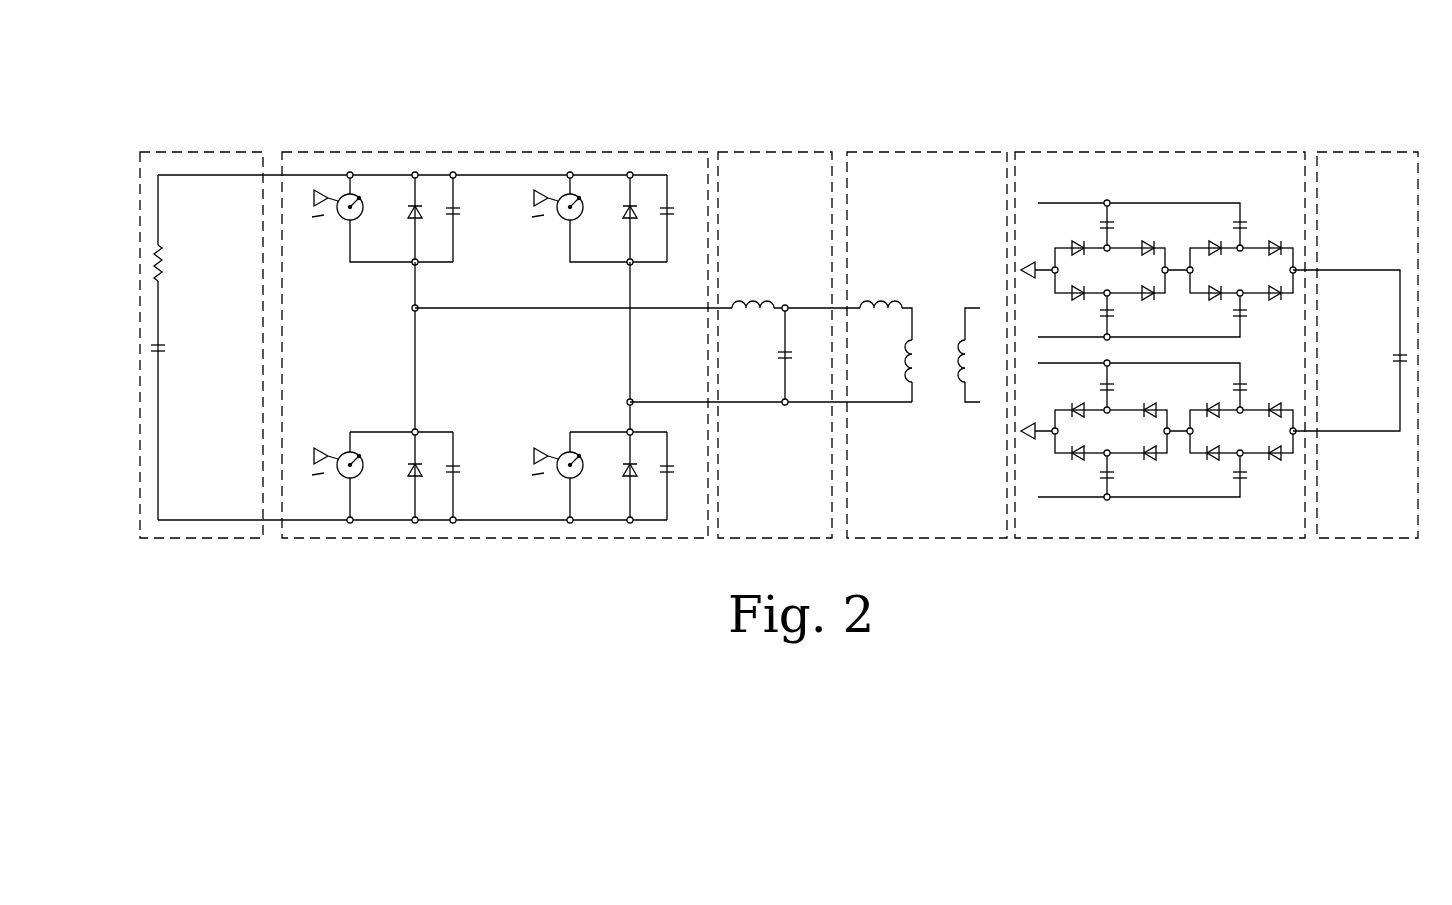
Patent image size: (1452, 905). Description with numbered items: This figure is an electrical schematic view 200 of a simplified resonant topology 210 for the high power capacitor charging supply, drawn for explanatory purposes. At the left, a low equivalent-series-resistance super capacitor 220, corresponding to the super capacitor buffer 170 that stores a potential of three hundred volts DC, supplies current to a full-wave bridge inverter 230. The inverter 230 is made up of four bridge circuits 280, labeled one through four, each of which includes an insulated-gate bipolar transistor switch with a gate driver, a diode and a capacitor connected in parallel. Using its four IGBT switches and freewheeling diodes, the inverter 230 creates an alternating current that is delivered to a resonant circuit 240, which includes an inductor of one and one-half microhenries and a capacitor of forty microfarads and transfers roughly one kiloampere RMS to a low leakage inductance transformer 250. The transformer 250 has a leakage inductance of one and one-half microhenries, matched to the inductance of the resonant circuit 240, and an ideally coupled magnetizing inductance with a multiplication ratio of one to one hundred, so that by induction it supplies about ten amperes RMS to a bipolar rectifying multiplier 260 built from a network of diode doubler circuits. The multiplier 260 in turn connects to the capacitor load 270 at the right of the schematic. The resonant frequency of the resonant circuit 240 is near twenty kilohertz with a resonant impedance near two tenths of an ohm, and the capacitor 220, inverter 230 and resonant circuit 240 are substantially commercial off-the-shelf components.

The schematic view 200 is at (233, 91).
The simplified resonant topology 210 is at (116, 143).
The low ESR super capacitor 220 is at (201, 345).
The full-wave bridge inverter 230 is at (433, 345).
The resonant circuit 240 is at (663, 345).
The low leakage inductance transformer 250 is at (927, 345).
The bipolar rectifying multiplier 260 is at (1160, 345).
The capacitor load 270 is at (1355, 345).
The bridge circuit 280 is at (599, 476).
The super capacitor buffer 170 is at (199, 331).